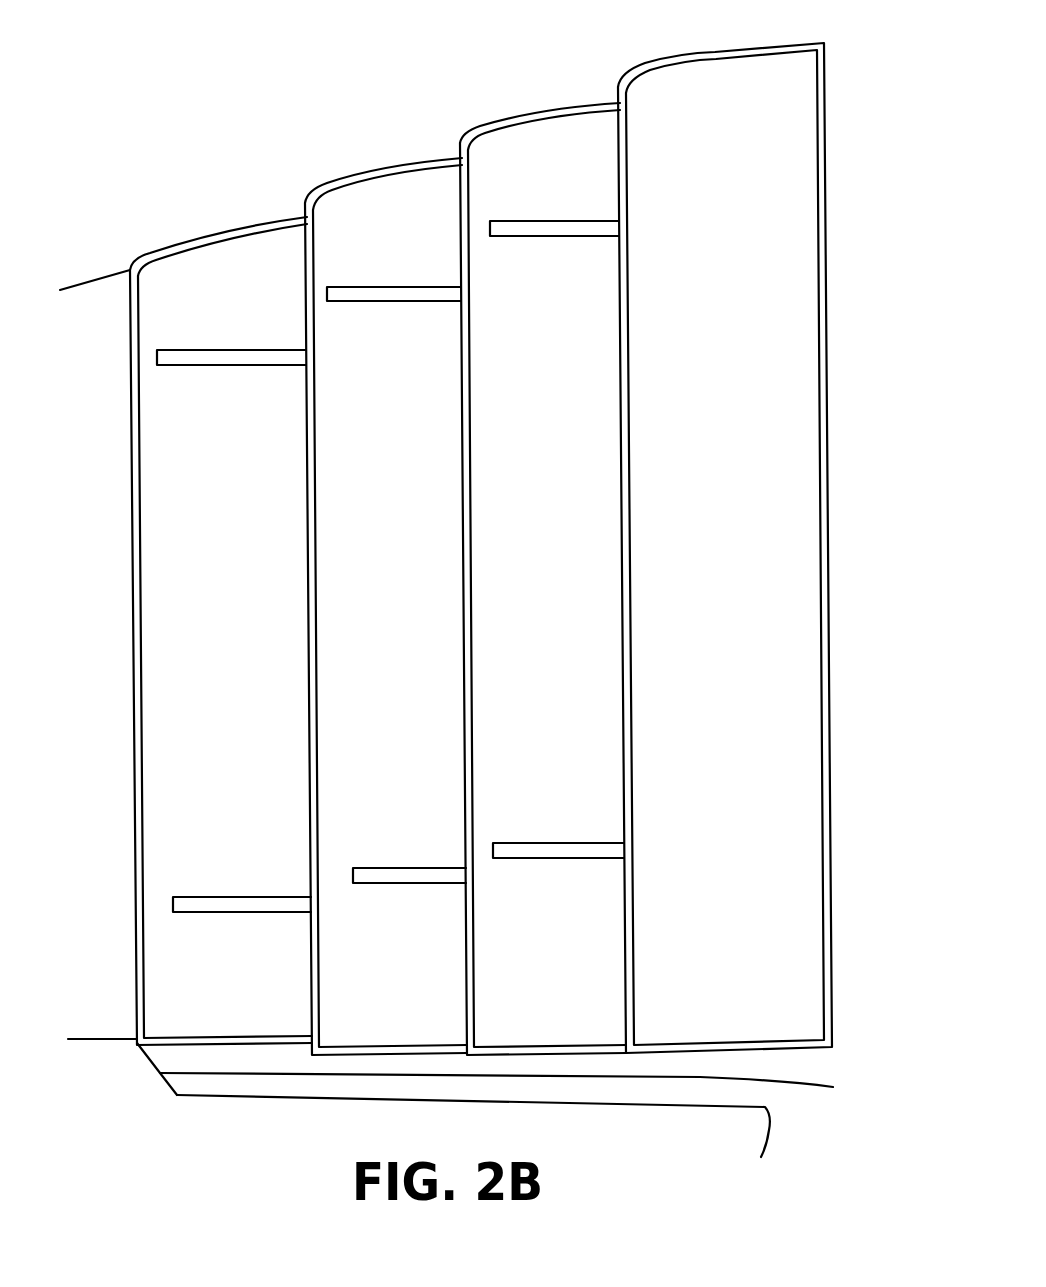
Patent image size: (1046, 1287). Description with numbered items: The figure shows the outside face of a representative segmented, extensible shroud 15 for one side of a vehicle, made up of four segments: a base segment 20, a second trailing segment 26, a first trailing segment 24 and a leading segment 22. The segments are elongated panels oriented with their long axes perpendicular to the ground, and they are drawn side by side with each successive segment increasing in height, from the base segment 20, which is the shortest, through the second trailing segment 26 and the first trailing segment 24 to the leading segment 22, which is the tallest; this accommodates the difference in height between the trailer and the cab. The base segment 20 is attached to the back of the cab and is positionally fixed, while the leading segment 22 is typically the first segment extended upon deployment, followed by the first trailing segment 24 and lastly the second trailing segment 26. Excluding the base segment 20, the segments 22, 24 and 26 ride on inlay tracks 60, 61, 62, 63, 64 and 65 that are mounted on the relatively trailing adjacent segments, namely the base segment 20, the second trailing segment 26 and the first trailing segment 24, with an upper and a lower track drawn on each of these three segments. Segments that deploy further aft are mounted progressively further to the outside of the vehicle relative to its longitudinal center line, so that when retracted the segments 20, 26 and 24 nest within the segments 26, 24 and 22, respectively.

The segmented extensible shroud 15 is at (412, 96).
The base segment 20 is at (240, 283).
The second trailing segment 26 is at (433, 212).
The first trailing segment 24 is at (565, 147).
The leading segment 22 is at (725, 95).
The inlay track 60 is at (597, 227).
The inlay track 61 is at (415, 293).
The inlay track 62 is at (242, 357).
The inlay track 63 is at (575, 850).
The inlay track 64 is at (428, 875).
The inlay track 65 is at (262, 905).